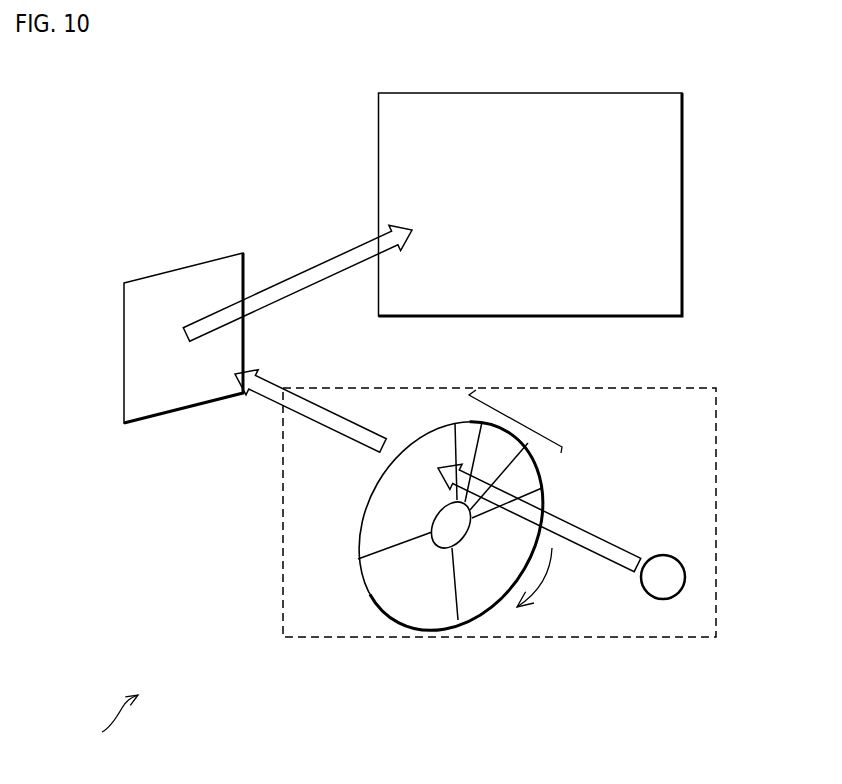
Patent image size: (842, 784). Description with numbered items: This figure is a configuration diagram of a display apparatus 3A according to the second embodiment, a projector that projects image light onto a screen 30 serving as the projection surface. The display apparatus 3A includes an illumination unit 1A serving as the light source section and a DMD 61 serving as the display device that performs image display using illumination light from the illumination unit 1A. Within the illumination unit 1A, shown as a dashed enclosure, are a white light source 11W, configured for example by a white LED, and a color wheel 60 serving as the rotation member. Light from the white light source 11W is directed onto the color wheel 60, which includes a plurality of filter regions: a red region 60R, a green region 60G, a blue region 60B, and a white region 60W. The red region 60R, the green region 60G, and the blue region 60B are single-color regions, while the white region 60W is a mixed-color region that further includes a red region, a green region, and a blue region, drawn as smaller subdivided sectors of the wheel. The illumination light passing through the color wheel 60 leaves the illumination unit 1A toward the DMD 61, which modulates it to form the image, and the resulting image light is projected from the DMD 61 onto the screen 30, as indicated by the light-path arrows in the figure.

The screen 30 is at (682, 203).
The DMD 61 is at (185, 410).
The illumination unit 1A is at (630, 640).
The display apparatus 3A is at (113, 731).
The color wheel 60 is at (357, 602).
The red region 60R is at (373, 532).
The green region 60G is at (420, 615).
The blue region 60B is at (475, 583).
The white region 60W is at (523, 418).
The white light source 11W is at (686, 577).